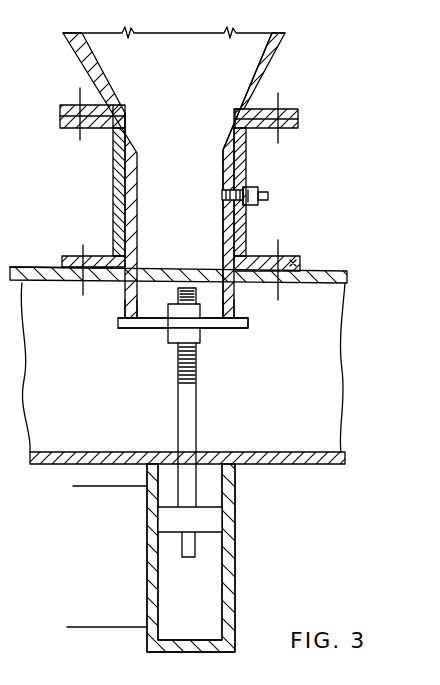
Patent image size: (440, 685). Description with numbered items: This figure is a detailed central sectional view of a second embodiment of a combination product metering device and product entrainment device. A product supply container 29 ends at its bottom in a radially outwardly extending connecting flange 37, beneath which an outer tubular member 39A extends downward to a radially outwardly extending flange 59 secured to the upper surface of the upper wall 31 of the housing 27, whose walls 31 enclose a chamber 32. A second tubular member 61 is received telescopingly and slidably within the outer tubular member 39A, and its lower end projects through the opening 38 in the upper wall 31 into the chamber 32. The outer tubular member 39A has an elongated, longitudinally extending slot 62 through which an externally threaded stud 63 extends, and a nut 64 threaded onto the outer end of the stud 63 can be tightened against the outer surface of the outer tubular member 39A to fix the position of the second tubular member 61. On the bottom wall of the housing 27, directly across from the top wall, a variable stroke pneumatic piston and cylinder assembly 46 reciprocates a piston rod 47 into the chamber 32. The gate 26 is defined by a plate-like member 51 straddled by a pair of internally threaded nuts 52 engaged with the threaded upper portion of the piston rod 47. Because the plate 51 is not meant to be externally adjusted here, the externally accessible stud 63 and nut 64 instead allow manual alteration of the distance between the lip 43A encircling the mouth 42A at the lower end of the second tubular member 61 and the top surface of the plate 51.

The gate 26 is at (117, 329).
The housing 27 is at (47, 263).
The product supply container 29 is at (270, 58).
The walls 31 is at (28, 267).
The chamber 32 is at (62, 410).
The connecting flange 37 is at (297, 113).
The opening 38 is at (230, 287).
The outer tubular member 39A is at (246, 162).
The mouth 42A is at (157, 303).
The lip 43A is at (136, 330).
The pneumatic piston and cylinder assembly 46 is at (236, 546).
The piston rod 47 is at (188, 414).
The plate-like member 51 is at (236, 326).
The nuts 52 is at (196, 326).
The flange 59 is at (300, 262).
The second tubular member 61 is at (222, 150).
The slot 62 is at (243, 177).
The externally threaded stud 63 is at (268, 197).
The nut 64 is at (251, 206).